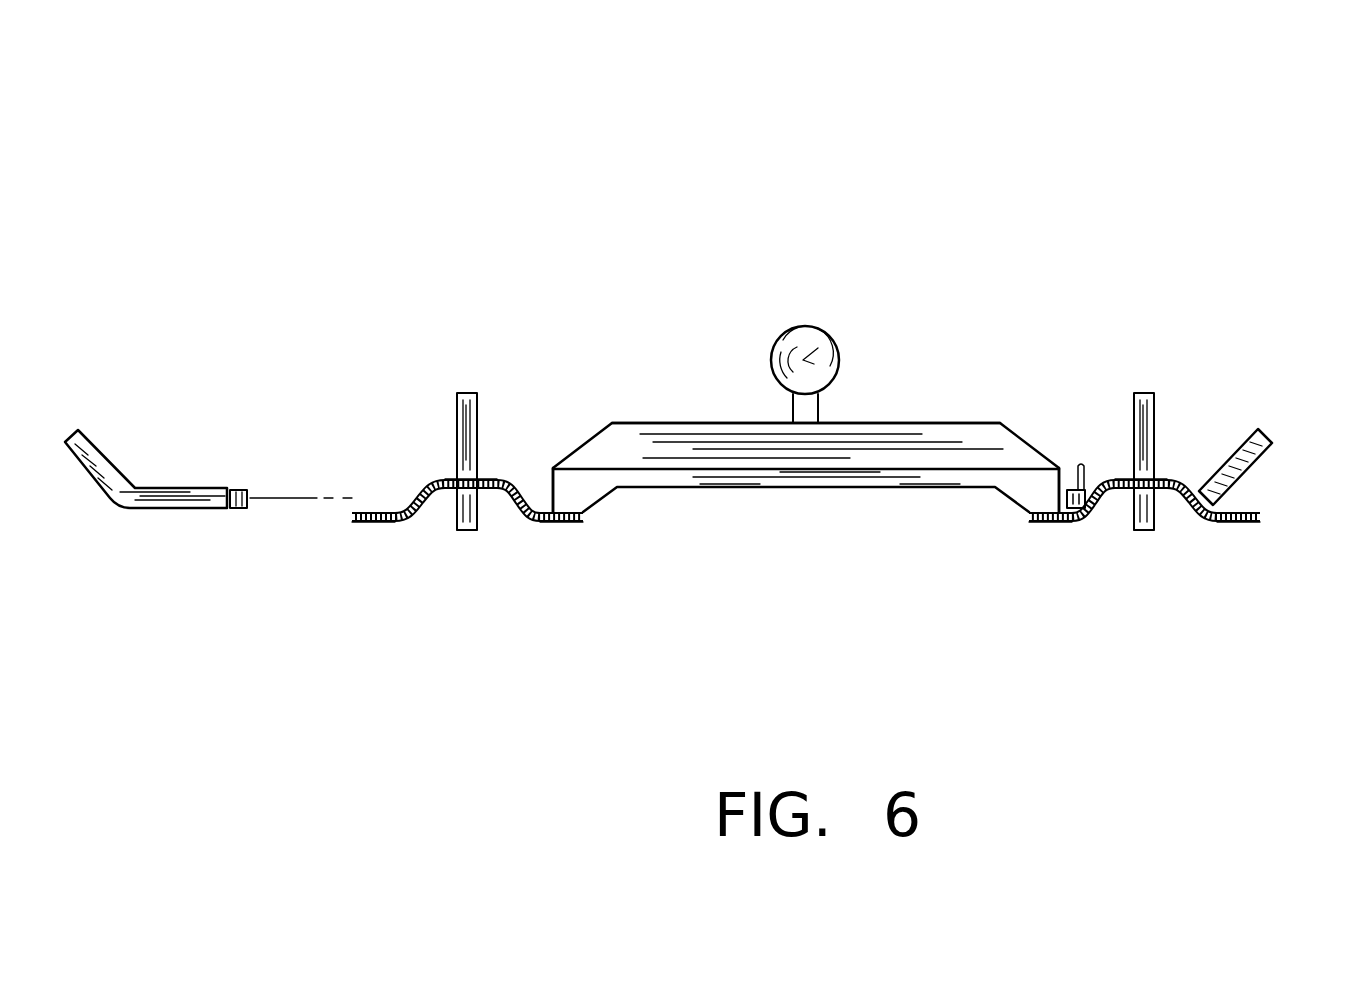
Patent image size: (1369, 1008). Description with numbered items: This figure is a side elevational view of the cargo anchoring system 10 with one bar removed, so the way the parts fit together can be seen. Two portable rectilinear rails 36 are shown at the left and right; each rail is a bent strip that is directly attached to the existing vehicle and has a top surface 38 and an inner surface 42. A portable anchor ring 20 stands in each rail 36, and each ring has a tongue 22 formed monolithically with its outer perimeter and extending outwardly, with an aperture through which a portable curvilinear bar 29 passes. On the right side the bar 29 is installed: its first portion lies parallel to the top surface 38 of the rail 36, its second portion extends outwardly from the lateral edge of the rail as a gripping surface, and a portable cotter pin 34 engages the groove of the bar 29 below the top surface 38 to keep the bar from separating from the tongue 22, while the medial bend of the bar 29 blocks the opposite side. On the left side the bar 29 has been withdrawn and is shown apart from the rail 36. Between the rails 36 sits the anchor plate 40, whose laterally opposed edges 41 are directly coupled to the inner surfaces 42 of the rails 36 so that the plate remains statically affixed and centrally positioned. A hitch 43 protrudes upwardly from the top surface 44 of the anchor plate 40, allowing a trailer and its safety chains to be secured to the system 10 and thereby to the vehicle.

The system 10 is at (415, 218).
The portable anchor ring 20 is at (467, 400).
The tongue 22 is at (470, 531).
The portable curvilinear bar 29 is at (707, 516).
The portable cotter pin 34 is at (1085, 490).
The portable rectilinear rail 36 is at (805, 570).
The top surface of the rail 38 is at (422, 465).
The anchor plate 40 is at (940, 432).
The laterally opposed edge 41 is at (548, 512).
The inner surface of the rail 42 is at (530, 486).
The hitch 43 is at (805, 360).
The top surface of the anchor plate 44 is at (866, 410).